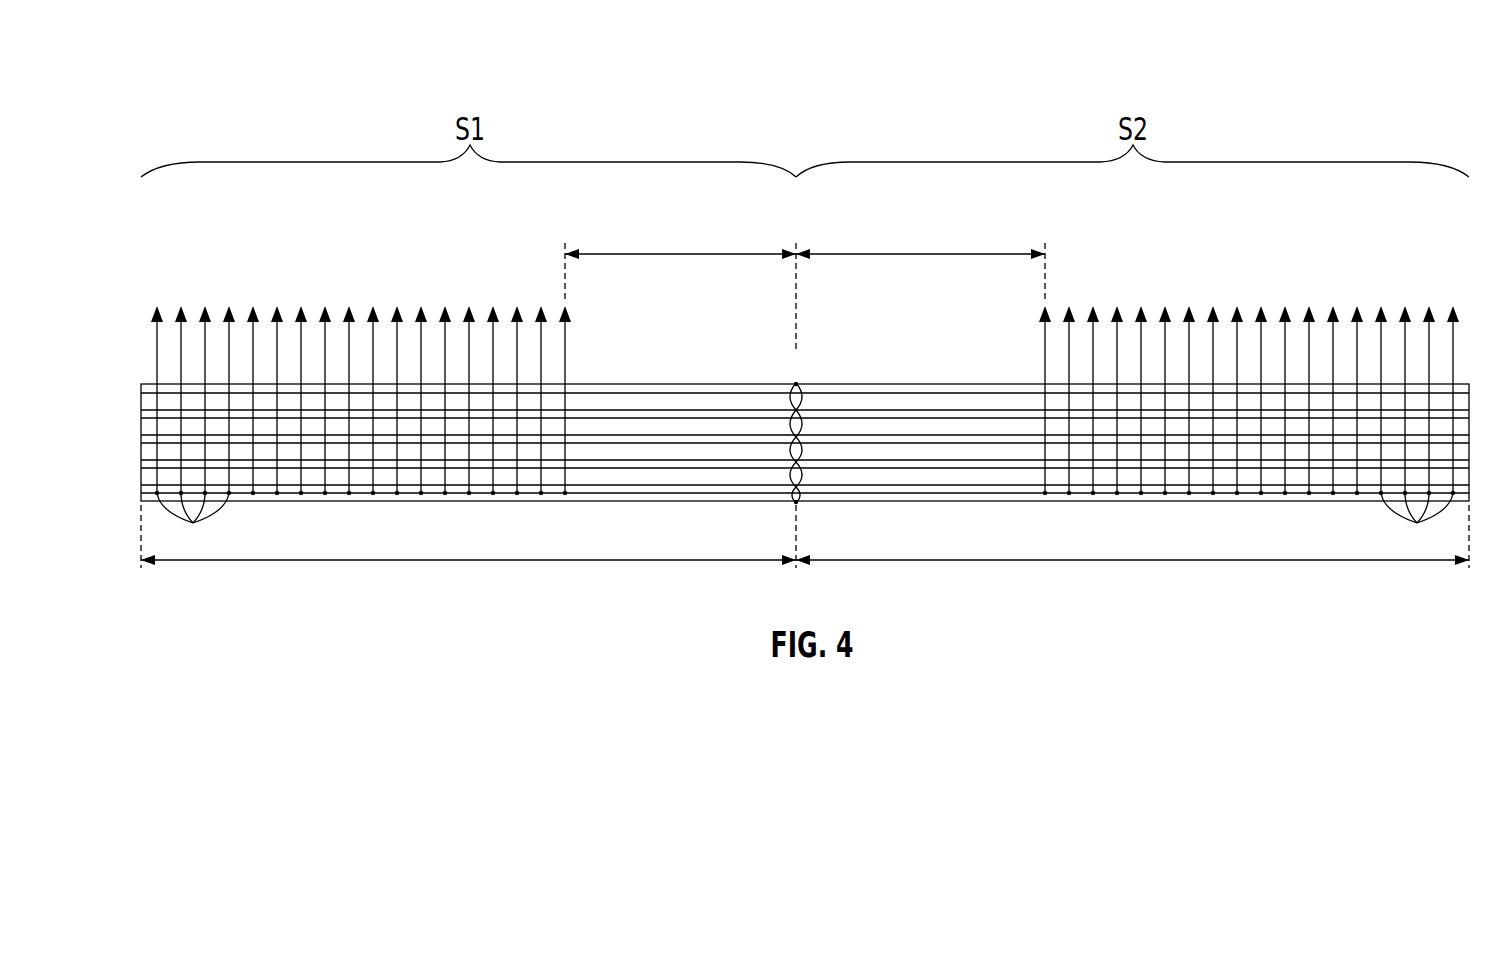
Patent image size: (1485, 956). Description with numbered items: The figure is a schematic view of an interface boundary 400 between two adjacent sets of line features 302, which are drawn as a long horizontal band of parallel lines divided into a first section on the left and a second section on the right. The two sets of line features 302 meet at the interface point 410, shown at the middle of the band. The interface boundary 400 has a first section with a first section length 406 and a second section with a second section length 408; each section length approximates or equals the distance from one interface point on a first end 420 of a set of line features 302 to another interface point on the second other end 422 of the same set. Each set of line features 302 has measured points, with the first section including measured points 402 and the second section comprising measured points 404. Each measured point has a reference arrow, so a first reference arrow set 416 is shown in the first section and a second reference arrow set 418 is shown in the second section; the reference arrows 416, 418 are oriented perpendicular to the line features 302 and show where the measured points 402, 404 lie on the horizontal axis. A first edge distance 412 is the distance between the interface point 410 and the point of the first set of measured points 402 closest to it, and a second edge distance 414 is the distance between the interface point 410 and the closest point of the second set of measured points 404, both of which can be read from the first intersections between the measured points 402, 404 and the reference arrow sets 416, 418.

The interface boundary 400 is at (1378, 119).
The line features 302 is at (611, 501).
The measured points 402 is at (193, 528).
The measured points 404 is at (1417, 528).
The first section length 406 is at (462, 561).
The second section length 408 is at (1194, 561).
The interface point 410 is at (791, 488).
The first edge distance 412 is at (658, 254).
The second edge distance 414 is at (926, 254).
The first reference arrow set 416 is at (325, 307).
The second reference arrow set 418 is at (1237, 307).
The first end 420 is at (756, 418).
The second other end 422 is at (138, 374).